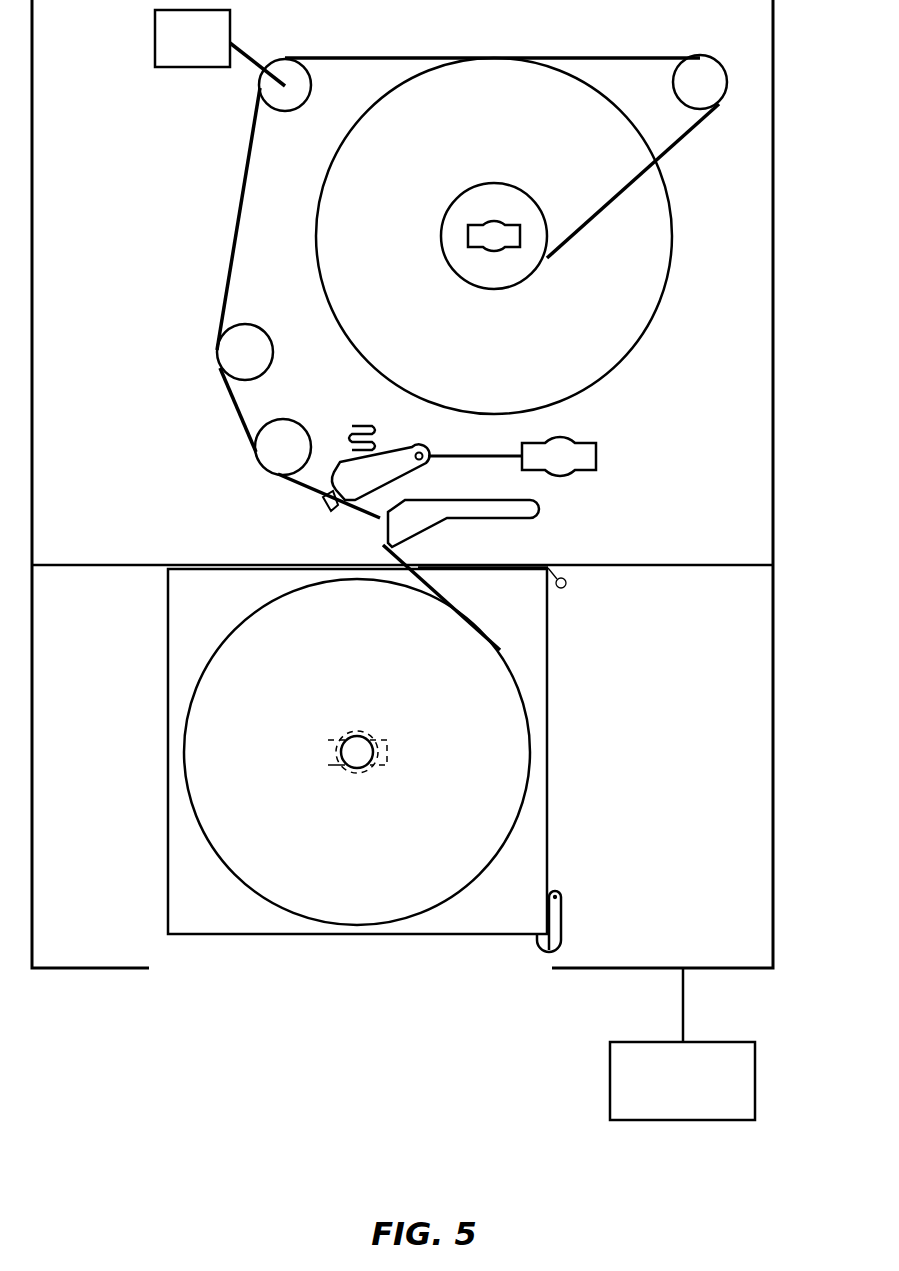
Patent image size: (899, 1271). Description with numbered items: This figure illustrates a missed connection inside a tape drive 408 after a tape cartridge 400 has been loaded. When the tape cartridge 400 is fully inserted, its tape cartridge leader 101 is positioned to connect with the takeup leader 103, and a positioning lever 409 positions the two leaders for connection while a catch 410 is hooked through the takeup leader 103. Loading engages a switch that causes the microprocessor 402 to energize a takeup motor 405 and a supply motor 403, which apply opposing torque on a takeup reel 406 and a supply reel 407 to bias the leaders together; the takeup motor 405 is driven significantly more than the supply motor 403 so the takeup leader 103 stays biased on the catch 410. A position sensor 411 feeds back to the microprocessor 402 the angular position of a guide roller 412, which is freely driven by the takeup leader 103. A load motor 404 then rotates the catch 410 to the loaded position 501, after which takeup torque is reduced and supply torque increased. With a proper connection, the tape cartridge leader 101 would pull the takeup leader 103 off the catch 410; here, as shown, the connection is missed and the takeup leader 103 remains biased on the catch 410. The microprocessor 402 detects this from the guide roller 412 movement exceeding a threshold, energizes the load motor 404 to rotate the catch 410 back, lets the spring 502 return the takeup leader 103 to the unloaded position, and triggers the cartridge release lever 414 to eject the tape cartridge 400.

The tape cartridge leader 101 is at (440, 590).
The takeup leader 103 is at (296, 486).
The tape cartridge 400 is at (547, 772).
The microprocessor 402 is at (610, 1083).
The supply motor 403 is at (387, 758).
The load motor 404 is at (598, 447).
The takeup motor 405 is at (505, 220).
The takeup reel 406 is at (672, 234).
The supply reel 407 is at (490, 870).
The tape drive 408 is at (773, 287).
The positioning lever 409 is at (538, 508).
The catch 410 is at (410, 470).
The position sensor 411 is at (155, 18).
The guide roller 412 is at (285, 108).
The cartridge release lever 414 is at (563, 920).
The loaded position 501 is at (314, 510).
The spring 502 is at (374, 427).